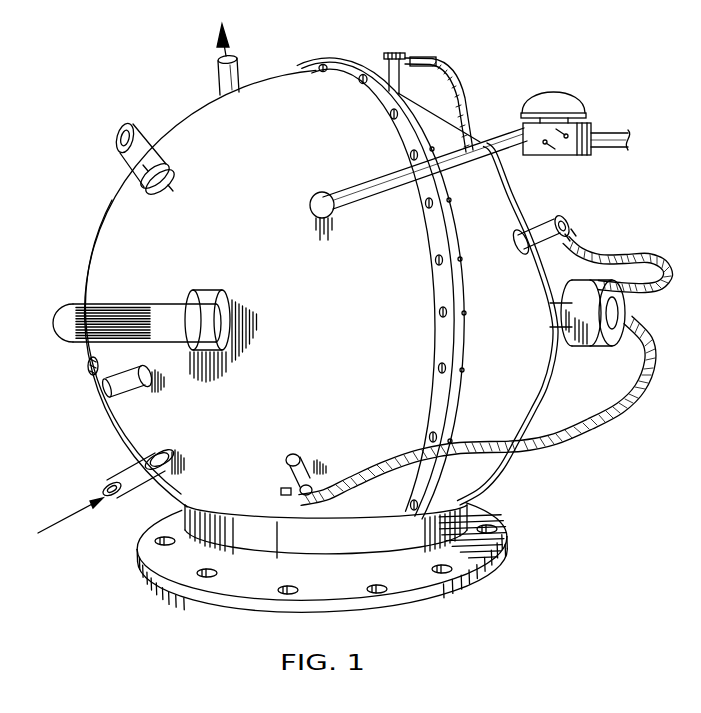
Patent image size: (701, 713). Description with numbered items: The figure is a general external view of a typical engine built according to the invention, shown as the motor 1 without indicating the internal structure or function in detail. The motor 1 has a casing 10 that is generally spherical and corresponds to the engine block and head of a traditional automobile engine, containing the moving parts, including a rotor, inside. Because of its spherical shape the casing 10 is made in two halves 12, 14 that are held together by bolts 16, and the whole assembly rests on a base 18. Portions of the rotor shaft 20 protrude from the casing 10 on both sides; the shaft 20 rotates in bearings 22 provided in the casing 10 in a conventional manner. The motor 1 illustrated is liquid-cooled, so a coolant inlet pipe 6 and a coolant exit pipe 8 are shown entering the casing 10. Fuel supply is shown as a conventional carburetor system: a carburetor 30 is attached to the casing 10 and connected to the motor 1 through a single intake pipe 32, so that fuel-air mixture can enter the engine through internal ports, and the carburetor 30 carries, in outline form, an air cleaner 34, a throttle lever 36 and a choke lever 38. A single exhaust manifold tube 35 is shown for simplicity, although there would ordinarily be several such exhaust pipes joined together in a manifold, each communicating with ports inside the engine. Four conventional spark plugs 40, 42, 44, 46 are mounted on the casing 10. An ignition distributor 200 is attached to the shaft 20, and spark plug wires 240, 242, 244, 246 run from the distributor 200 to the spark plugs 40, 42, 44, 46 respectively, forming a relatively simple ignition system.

The motor 1 is at (102, 197).
The coolant inlet pipe 6 is at (130, 497).
The coolant exit pipe 8 is at (244, 80).
The casing 10 is at (322, 288).
The casing half 12 is at (202, 128).
The casing half 14 is at (450, 140).
The bolts 16 is at (433, 263).
The base 18 is at (494, 547).
The rotor shaft 20 is at (75, 350).
The bearings 22 is at (214, 293).
The carburetor 30 is at (571, 152).
The intake pipe 32 is at (480, 153).
The air cleaner 34 is at (551, 107).
The exhaust manifold tube 35 is at (134, 140).
The throttle lever 36 is at (624, 150).
The choke lever 38 is at (611, 132).
The spark plug 40 is at (287, 473).
The spark plug 42 is at (146, 394).
The spark plug 44 is at (541, 234).
The spark plug 46 is at (393, 77).
The ignition distributor 200 is at (613, 355).
The spark plug wire 240 is at (348, 503).
The spark plug wire 242 is at (88, 374).
The spark plug wire 244 is at (613, 247).
The spark plug wire 246 is at (454, 78).